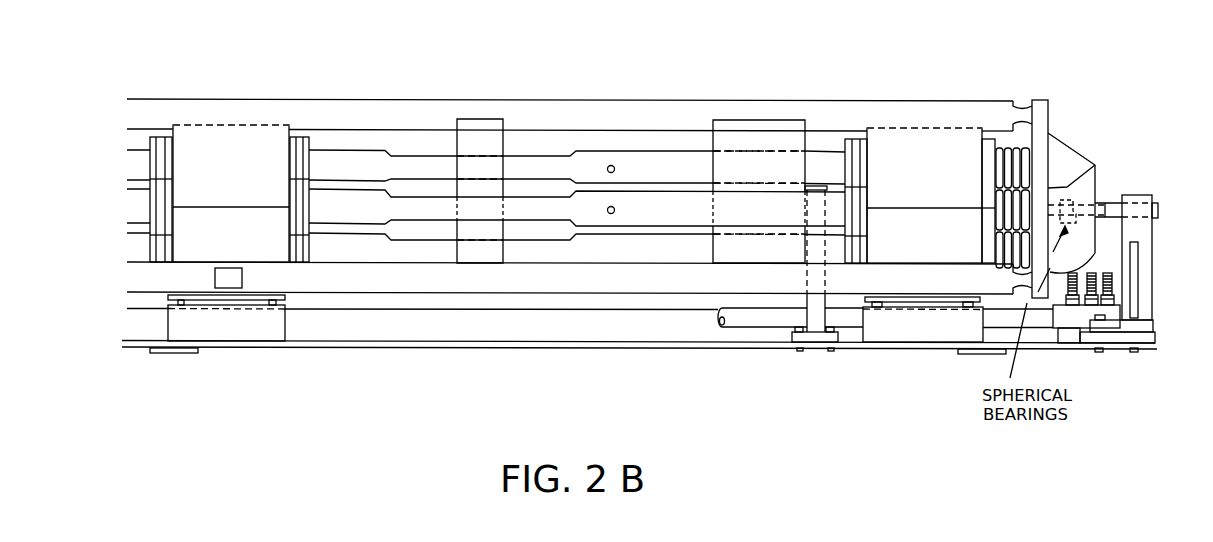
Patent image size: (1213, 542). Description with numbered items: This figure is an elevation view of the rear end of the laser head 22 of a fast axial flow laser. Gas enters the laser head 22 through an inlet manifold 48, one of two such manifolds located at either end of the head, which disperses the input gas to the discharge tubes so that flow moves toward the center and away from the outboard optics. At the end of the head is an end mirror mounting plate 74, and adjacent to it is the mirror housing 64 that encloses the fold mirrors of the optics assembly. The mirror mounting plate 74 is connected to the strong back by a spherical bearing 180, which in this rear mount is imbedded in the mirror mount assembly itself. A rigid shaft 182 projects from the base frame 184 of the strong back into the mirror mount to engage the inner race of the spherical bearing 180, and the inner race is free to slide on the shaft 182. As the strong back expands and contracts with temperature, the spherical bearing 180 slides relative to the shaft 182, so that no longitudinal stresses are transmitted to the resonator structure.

The laser head 22 is at (639, 226).
The inlet manifold 48 is at (922, 140).
The end mirror mounting plate 74 is at (1040, 123).
The mirror housing 64 is at (1072, 158).
The spherical bearing 180 is at (1085, 193).
The rigid shaft 182 is at (1100, 198).
The base frame 184 is at (1138, 243).